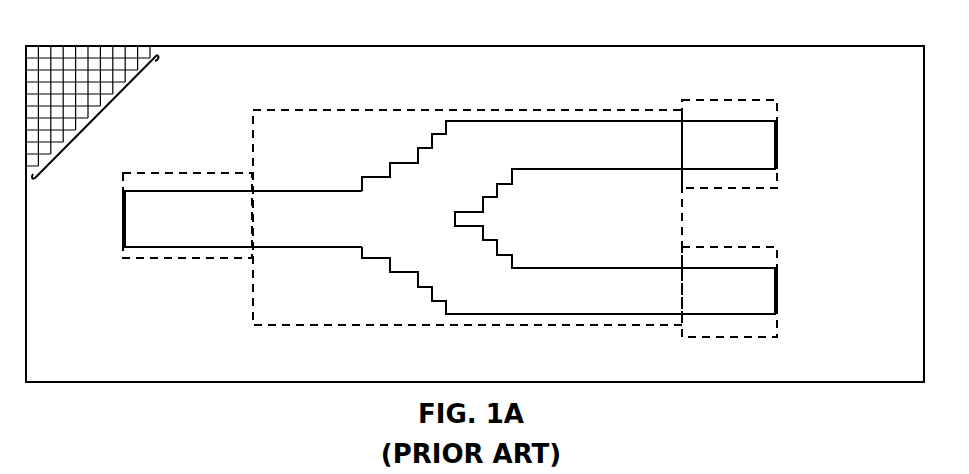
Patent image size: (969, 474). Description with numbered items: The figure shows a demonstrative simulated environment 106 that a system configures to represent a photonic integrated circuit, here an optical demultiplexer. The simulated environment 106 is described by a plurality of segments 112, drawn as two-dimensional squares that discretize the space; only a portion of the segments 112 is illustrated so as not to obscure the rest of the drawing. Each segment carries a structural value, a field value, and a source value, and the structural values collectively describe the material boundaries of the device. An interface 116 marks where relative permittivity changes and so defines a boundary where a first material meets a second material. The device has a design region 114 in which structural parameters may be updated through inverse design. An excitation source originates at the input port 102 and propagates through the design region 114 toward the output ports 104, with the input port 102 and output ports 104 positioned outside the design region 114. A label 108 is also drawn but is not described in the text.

The input port 102 is at (163, 258).
The output ports 104 is at (748, 190).
The simulated environment 106 is at (91, 36).
The substrate region 108 is at (475, 260).
The segments 112 is at (100, 121).
The design region 114 is at (467, 198).
The interface 116 is at (322, 247).